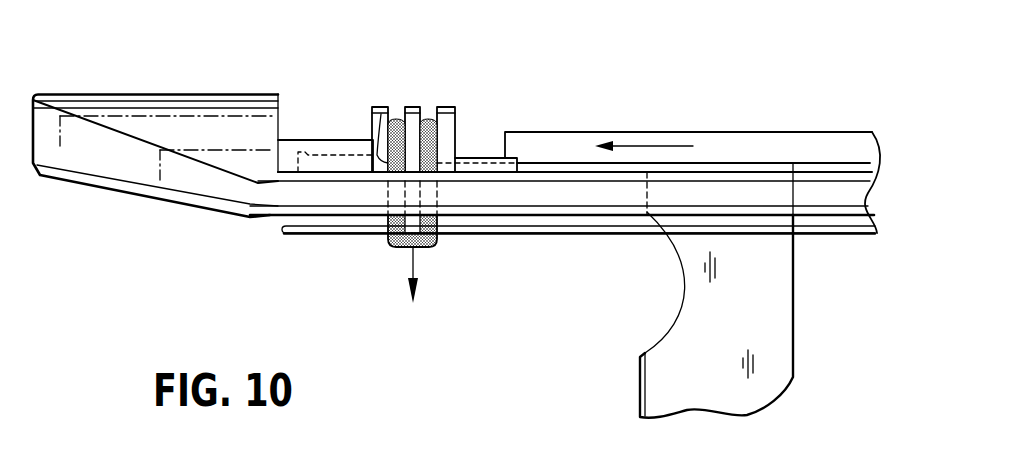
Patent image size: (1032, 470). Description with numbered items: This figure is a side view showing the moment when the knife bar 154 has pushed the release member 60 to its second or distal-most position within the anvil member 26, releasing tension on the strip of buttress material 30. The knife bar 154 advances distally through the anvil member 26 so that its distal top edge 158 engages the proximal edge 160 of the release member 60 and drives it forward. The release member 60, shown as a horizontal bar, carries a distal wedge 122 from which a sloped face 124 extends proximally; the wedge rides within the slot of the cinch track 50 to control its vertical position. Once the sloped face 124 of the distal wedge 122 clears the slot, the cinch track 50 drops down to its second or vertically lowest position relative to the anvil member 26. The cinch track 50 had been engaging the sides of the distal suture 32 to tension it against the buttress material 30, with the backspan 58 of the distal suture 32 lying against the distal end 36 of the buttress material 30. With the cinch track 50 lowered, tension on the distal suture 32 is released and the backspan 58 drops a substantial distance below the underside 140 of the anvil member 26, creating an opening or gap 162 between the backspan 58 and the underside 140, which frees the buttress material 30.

The anvil member 26 is at (72, 93).
The cinch track 50 is at (313, 140).
The distal wedge 122 is at (347, 145).
The sloped face 124 is at (385, 108).
The distal suture 32 is at (435, 152).
The gap 162 is at (447, 227).
The backspan 58 is at (423, 248).
The buttress material 30 is at (552, 235).
The distal end 36 is at (338, 235).
The release member 60 is at (550, 167).
The proximal edge 160 is at (647, 167).
The distal top edge 158 is at (650, 167).
The knife bar 154 is at (778, 327).
The underside 140 is at (265, 217).